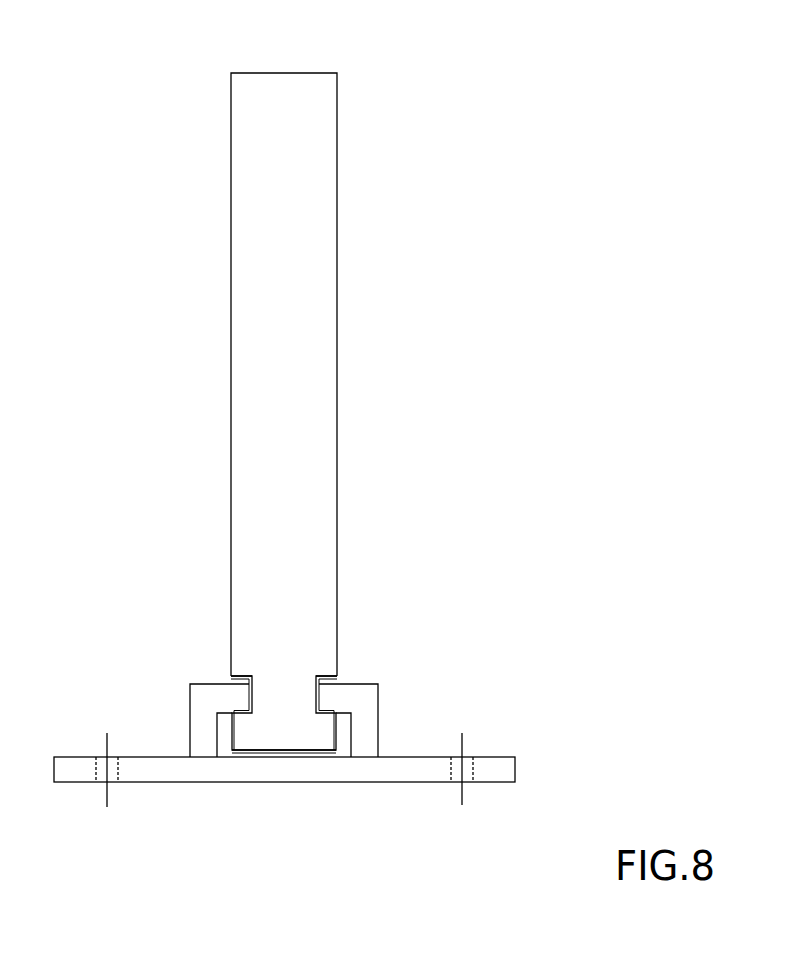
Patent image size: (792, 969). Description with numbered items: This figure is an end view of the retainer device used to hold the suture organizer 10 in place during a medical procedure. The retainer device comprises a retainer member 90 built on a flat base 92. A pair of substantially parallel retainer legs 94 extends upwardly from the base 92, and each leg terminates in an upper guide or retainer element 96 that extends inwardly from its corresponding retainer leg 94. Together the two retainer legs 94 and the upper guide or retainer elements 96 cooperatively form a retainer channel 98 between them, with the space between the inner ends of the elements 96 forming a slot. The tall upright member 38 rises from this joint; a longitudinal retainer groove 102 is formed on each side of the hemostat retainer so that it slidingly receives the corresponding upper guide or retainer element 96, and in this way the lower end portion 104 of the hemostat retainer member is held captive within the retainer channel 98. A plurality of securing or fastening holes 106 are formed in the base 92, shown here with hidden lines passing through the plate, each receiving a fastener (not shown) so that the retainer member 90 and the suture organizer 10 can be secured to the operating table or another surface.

The suture organizer 10 is at (387, 403).
The post 38 is at (235, 468).
The retainer member 90 is at (172, 603).
The base 92 is at (390, 772).
The retainer legs 94 is at (200, 728).
The upper guide or retainer element 96 is at (238, 698).
The retainer channel 98 is at (221, 745).
The longitudinal retainer groove 102 is at (232, 675).
The lower end portion 104 is at (312, 732).
The securing or fastening holes 106 is at (102, 768).